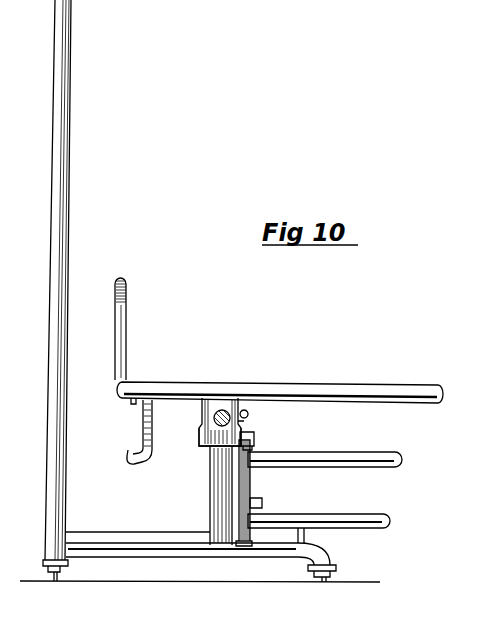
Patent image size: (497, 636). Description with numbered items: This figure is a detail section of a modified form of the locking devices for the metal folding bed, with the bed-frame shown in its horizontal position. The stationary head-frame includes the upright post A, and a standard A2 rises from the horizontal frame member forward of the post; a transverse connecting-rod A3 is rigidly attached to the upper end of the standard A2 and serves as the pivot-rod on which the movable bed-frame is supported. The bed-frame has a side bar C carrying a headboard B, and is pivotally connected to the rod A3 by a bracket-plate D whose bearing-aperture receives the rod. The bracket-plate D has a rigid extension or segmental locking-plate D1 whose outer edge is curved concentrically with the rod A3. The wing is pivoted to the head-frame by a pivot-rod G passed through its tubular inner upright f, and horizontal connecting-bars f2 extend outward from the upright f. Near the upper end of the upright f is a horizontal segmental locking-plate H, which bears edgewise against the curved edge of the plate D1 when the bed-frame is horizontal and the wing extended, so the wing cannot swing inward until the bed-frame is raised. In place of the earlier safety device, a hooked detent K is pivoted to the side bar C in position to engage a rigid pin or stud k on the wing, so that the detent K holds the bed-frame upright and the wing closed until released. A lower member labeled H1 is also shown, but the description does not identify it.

The upright post A is at (69, 222).
The headboard B is at (127, 329).
The side bar C is at (319, 386).
The hooked detent K is at (141, 431).
The transverse connecting-rod A3 is at (203, 416).
The bracket-plate D is at (250, 424).
The pivot-rod G is at (255, 440).
The horizontal segmental locking-plate H is at (262, 451).
The segmental locking-plate D1 is at (209, 446).
The standard A2 is at (212, 488).
The inner upright f is at (251, 482).
The rigid pin or stud k is at (263, 503).
The horizontal connecting-bar f2 is at (386, 513).
The base tube H1 is at (190, 532).